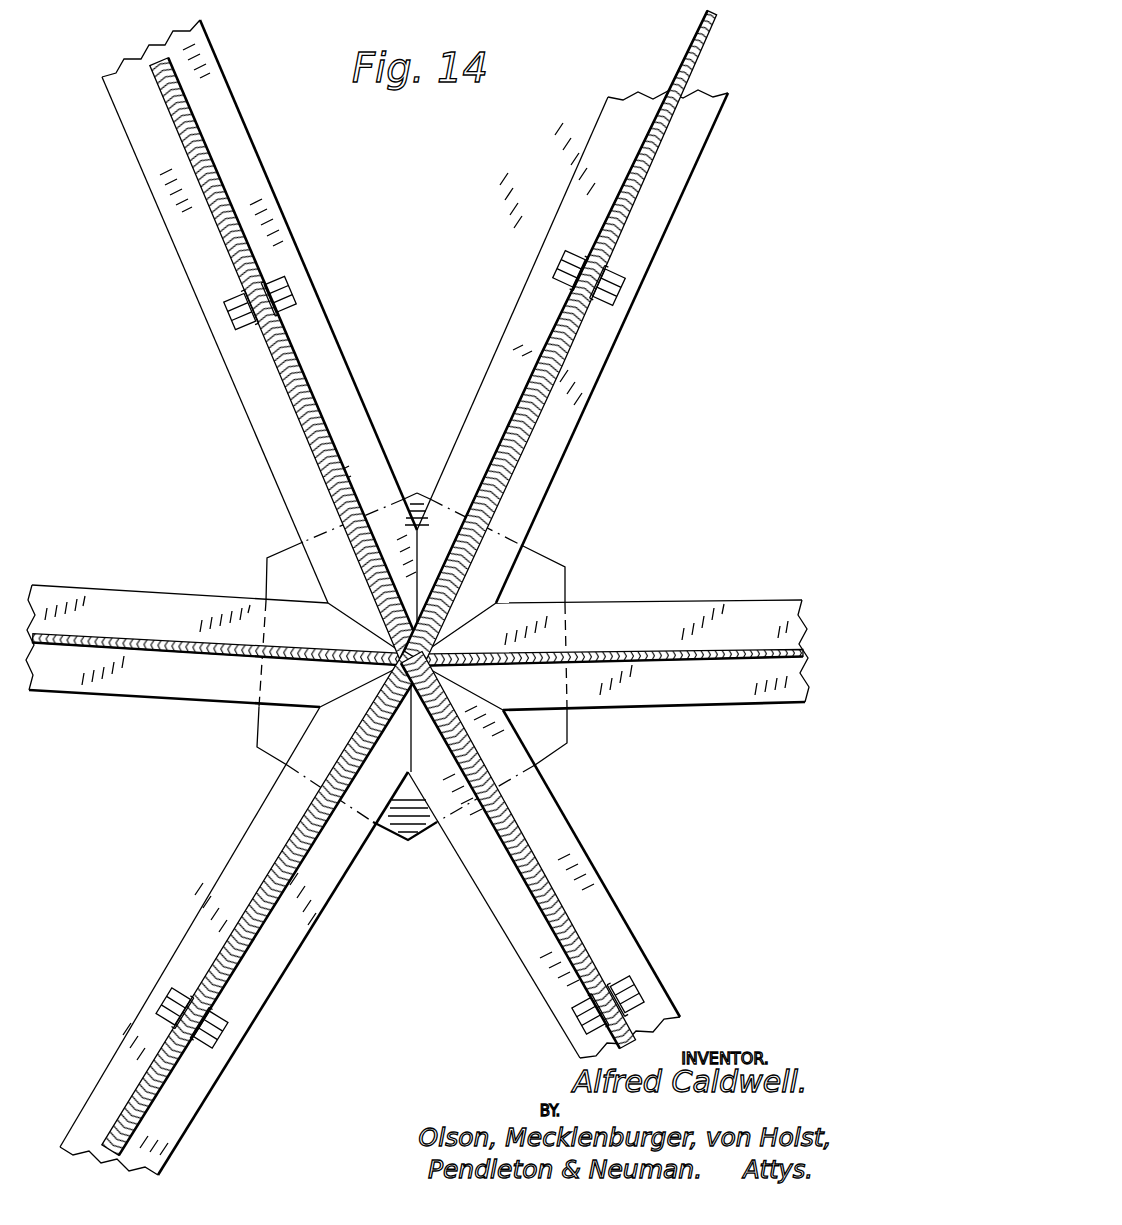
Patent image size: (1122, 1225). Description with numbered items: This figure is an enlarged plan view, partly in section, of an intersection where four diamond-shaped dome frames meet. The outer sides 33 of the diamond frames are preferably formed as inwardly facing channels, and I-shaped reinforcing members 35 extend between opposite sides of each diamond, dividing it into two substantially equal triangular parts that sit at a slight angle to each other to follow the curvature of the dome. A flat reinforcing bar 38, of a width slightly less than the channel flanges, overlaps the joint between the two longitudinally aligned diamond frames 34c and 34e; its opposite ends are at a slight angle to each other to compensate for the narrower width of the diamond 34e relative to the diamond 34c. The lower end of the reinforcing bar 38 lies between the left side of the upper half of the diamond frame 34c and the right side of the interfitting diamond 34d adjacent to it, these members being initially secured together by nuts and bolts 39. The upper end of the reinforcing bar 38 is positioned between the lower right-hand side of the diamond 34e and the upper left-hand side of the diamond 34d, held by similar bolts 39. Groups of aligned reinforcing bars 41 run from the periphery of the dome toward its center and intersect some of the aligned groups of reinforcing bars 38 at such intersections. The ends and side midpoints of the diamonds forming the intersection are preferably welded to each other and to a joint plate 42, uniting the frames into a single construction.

The outer side 33 is at (263, 180).
The diamond frame 34c is at (325, 875).
The diamond frame 34d is at (263, 795).
The diamond frame 34e is at (498, 383).
The I-shaped reinforcing member 35 is at (117, 605).
The reinforcing bar 38 is at (694, 50).
The nuts and bolts 39 is at (623, 283).
The reinforcing bar 41 is at (287, 350).
The joint plate 42 is at (551, 568).